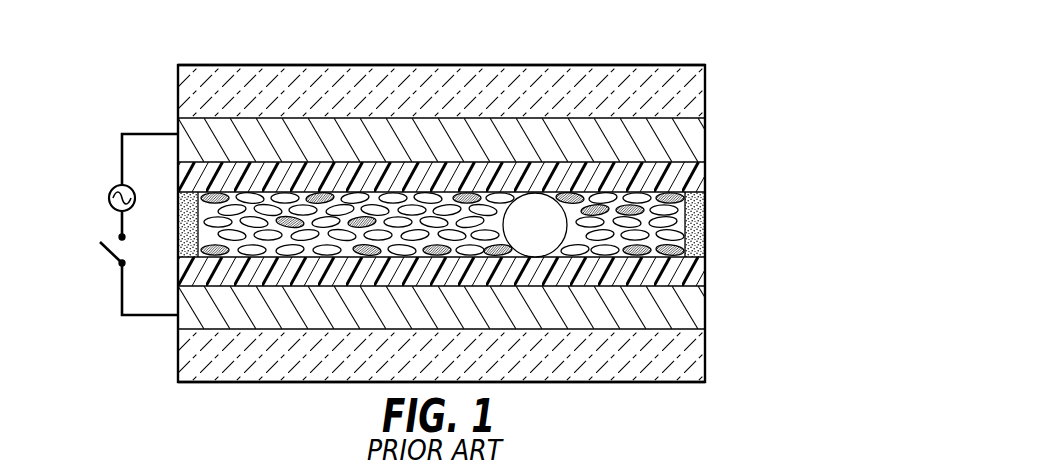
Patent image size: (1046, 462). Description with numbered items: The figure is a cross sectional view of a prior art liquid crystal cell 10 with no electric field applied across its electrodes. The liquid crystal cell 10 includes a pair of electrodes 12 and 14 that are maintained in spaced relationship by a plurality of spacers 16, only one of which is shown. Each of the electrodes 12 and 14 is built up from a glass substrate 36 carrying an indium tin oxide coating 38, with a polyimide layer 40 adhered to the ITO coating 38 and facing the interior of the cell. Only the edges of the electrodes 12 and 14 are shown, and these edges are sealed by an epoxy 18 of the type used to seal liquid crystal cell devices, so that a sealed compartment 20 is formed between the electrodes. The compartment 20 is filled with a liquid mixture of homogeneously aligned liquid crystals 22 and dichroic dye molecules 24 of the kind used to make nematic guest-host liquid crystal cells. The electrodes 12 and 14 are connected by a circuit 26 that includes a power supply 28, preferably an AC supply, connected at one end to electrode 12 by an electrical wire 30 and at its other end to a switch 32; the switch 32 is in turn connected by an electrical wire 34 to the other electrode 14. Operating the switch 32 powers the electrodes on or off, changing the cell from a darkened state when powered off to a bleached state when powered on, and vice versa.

The liquid crystal cell 10 is at (802, 164).
The electrode 12 is at (660, 55).
The electrode 14 is at (672, 395).
The spacer 16 is at (526, 207).
The epoxy 18 is at (178, 224).
The sealed compartment 20 is at (692, 243).
The homogeneously aligned liquid crystals 22 is at (428, 197).
The dichroic dye molecules 24 is at (320, 197).
The circuit 26 is at (105, 213).
The power supply 28 is at (107, 199).
The electrical wire 30 is at (139, 133).
The switch 32 is at (126, 250).
The electrical wire 34 is at (138, 316).
The glass substrate 36 is at (697, 93).
The indium tin oxide coating 38 is at (700, 137).
The polyimide layer 40 is at (697, 178).